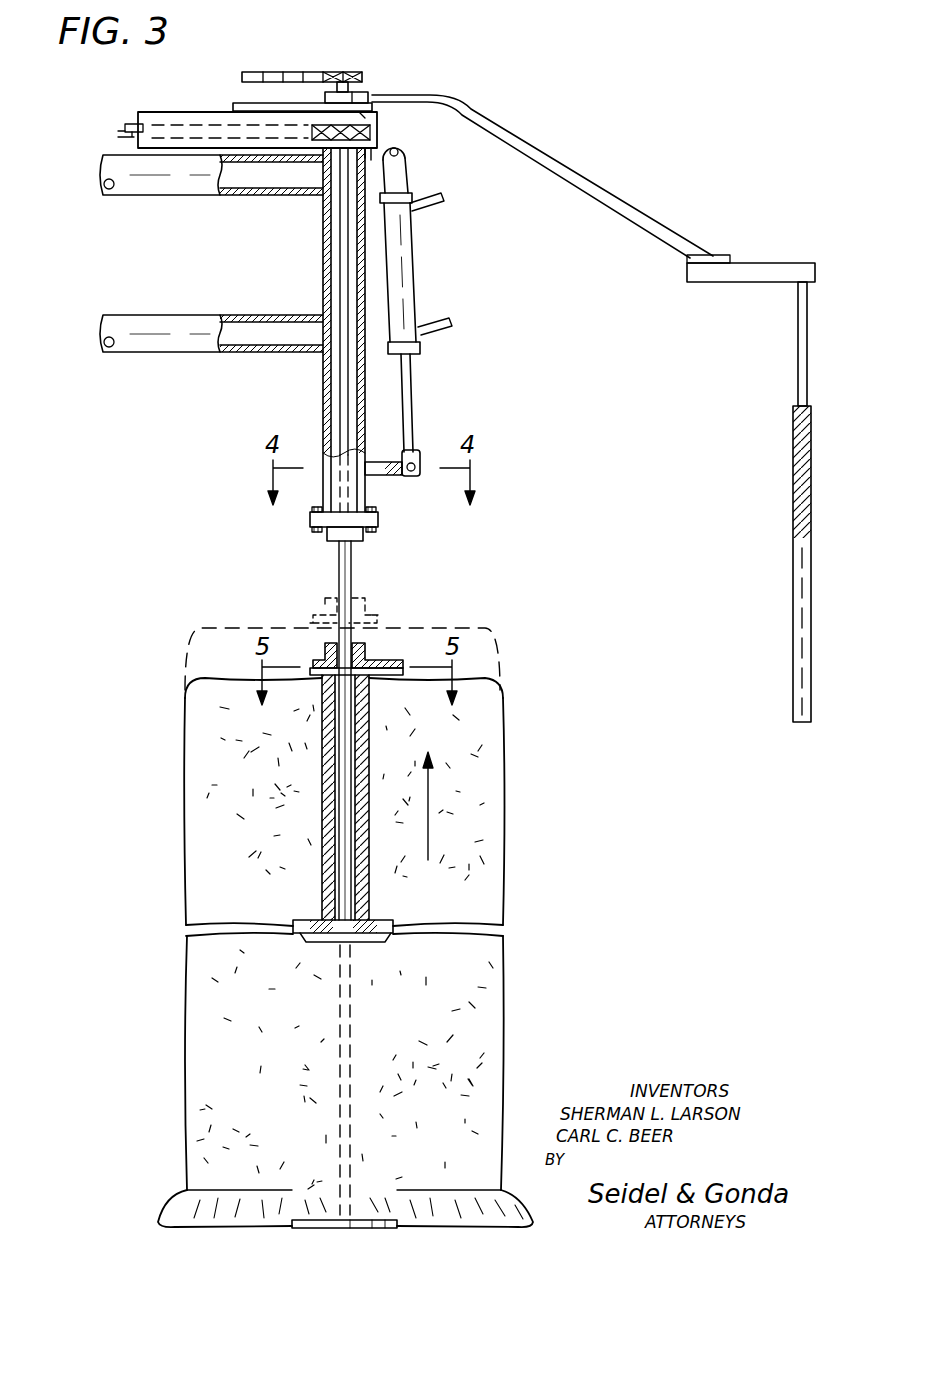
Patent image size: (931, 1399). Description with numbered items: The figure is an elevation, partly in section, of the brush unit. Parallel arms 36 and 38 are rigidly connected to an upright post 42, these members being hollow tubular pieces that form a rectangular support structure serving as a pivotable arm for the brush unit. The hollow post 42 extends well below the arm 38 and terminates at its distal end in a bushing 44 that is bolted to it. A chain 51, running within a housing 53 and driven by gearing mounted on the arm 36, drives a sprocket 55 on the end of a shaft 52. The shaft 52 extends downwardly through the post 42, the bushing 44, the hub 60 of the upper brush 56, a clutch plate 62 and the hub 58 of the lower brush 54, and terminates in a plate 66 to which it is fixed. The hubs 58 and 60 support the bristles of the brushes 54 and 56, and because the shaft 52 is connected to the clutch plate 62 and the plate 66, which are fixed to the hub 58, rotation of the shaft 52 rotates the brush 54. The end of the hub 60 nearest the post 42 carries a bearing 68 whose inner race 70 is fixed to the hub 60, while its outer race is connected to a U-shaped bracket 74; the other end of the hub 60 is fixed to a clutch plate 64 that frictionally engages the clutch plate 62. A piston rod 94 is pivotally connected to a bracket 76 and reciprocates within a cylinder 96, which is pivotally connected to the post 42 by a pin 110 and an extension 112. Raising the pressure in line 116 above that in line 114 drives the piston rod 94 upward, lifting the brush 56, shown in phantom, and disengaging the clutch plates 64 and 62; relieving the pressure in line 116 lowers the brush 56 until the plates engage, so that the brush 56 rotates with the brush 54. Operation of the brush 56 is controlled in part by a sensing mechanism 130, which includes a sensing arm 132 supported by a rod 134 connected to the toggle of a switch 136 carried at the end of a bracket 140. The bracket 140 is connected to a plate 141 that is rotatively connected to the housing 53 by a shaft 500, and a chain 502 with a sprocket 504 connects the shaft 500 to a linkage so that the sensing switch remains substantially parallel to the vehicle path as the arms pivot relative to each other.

The parallel arm 36 is at (160, 191).
The parallel arm 38 is at (149, 315).
The upright post 42 is at (324, 252).
The bushing 44 is at (365, 535).
The chain 51 is at (129, 123).
The shaft 52 is at (345, 219).
The housing 53 is at (172, 112).
The brush 54 is at (194, 1003).
The sprocket 55 is at (363, 120).
The brush 56 is at (222, 625).
The hub 58 is at (331, 934).
The hub 60 is at (368, 725).
The clutch plate 62 is at (386, 941).
The clutch plate 64 is at (385, 921).
The plate 66 is at (312, 1220).
The bearing 68 is at (310, 603).
The inner race 70 is at (328, 655).
The U-shaped bracket 74 is at (410, 665).
The bracket 76 is at (394, 478).
The piston rod 94 is at (410, 400).
The cylinder 96 is at (409, 262).
The pin 110 is at (400, 152).
The extension 112 is at (383, 152).
The line 114 is at (441, 198).
The line 116 is at (442, 325).
The sensing mechanism 130 is at (703, 293).
The sensing arm 132 is at (795, 612).
The rod 134 is at (796, 393).
The switch 136 is at (750, 268).
The bracket 140 is at (583, 188).
The plate 141 is at (235, 108).
The shaft 500 is at (371, 92).
The chain 502 is at (262, 73).
The sprocket 504 is at (339, 72).